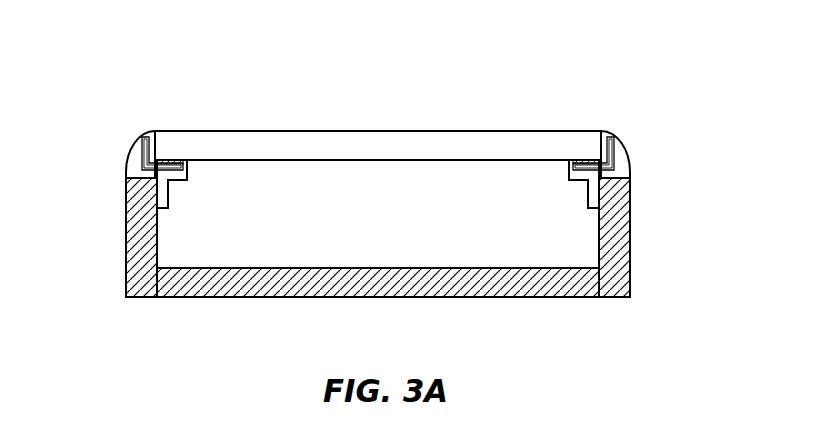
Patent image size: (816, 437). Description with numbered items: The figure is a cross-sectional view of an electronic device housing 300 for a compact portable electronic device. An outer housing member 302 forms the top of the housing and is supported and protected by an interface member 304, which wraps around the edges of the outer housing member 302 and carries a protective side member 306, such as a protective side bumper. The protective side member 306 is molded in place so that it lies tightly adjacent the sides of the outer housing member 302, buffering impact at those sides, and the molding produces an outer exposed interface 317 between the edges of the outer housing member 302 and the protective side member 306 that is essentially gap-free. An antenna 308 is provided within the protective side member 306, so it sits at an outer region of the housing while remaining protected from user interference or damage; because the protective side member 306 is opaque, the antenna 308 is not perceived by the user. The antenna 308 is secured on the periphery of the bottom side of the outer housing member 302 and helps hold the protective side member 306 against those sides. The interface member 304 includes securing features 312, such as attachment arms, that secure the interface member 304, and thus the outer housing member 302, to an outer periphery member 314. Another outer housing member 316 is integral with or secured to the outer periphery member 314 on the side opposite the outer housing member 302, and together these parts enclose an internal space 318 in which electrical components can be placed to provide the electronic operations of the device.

The electronic device housing 300 is at (204, 61).
The outer housing member 302 is at (335, 138).
The interface member 304 is at (130, 172).
The protective side member 306 is at (141, 146).
The antenna 308 is at (143, 162).
The securing features 312 is at (169, 200).
The outer periphery member 314 is at (126, 257).
The another outer housing member 316 is at (232, 297).
The outer exposed interface 317 is at (156, 121).
The internal space 318 is at (388, 245).